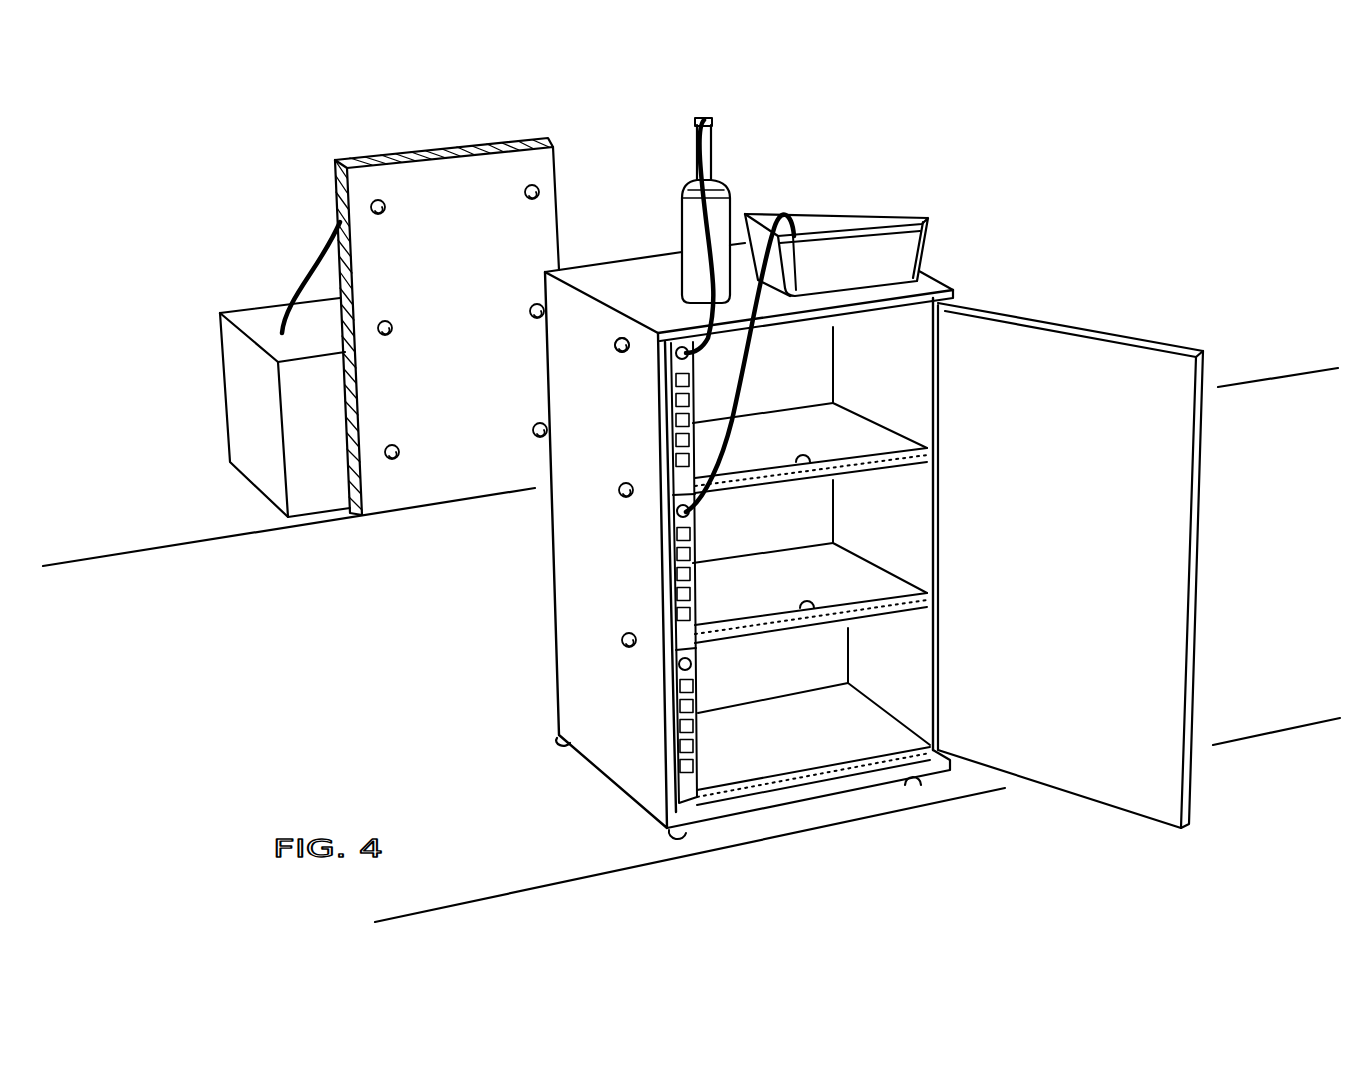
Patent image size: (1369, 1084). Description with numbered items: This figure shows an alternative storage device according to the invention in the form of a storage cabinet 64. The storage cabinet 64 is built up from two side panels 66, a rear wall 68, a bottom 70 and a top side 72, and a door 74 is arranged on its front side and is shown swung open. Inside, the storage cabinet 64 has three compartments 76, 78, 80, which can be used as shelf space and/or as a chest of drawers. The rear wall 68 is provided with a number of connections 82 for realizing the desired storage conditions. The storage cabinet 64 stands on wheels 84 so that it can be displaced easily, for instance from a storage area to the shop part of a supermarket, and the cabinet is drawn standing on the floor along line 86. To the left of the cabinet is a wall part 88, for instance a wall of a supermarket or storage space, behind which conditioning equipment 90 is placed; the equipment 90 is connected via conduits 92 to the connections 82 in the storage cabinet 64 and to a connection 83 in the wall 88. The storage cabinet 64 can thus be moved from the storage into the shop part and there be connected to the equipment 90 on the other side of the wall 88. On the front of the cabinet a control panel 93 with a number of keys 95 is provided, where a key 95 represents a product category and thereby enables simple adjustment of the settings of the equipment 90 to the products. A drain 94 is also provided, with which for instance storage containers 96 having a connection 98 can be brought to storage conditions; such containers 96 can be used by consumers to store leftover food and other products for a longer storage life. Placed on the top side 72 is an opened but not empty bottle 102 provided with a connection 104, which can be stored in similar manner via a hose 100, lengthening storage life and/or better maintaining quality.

The storage cabinet 64 is at (1138, 197).
The side panel 66 is at (627, 757).
The rear wall 68 is at (853, 175).
The bottom 70 is at (873, 777).
The top side 72 is at (927, 302).
The door 74 is at (1173, 570).
The compartment 76 is at (845, 380).
The compartment 78 is at (845, 528).
The compartment 80 is at (852, 661).
The connection 82 is at (626, 338).
The connection 83 is at (380, 200).
The wheel 84 is at (680, 827).
The floor line 86 is at (163, 577).
The wall part 88 is at (447, 301).
The conditioning equipment 90 is at (237, 353).
The conduit 92 is at (318, 262).
The control panel 93 is at (662, 415).
The drain 94 is at (752, 386).
The key 95 is at (676, 440).
The storage container 96 is at (878, 208).
The connection 98 is at (793, 232).
The hose 100 is at (676, 196).
The bottle 102 is at (690, 225).
The connection 104 is at (707, 122).